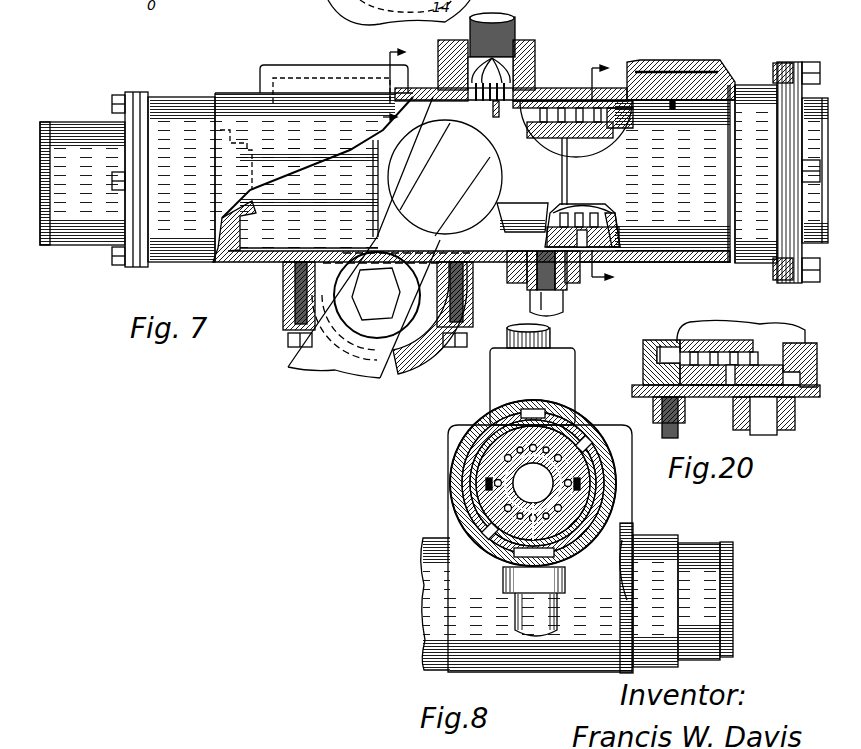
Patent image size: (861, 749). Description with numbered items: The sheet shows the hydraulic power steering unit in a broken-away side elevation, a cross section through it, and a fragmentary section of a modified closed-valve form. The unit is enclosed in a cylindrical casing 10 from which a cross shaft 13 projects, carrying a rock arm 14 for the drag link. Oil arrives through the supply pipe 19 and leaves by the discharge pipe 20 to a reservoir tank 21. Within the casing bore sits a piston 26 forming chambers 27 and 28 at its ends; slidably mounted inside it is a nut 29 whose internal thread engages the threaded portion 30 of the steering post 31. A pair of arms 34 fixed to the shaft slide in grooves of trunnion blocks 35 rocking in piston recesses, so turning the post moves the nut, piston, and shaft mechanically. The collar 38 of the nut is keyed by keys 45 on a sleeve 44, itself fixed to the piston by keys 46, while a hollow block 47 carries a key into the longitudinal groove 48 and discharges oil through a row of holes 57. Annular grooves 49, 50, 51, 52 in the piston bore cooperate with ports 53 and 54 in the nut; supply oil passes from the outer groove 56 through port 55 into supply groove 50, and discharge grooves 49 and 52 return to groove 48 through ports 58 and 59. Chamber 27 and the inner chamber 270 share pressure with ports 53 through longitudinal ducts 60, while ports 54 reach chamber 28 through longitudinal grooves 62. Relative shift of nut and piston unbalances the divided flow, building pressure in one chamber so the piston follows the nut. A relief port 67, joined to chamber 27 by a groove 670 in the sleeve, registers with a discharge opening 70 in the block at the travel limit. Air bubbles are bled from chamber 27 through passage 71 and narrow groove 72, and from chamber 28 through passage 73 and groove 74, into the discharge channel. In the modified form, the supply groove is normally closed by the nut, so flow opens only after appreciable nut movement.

In FIG. 7, the cylindrical casing 10 is at (572, 88).
In FIG. 20, the cylindrical casing 10 is at (643, 388).
In FIG. 8, the cylindrical casing 10 is at (497, 418).
In FIG. 7, the cross shaft 13 is at (366, 202).
In FIG. 7, the rock arm 14 is at (327, 364).
In FIG. 7, the supply pipe 19 is at (540, 296).
In FIG. 20, the supply pipe 19 is at (775, 433).
In FIG. 8, the supply pipe 19 is at (555, 613).
In FIG. 7, the discharge pipe 20 is at (492, 16).
In FIG. 8, the reservoir tank 21 is at (552, 340).
In FIG. 7, the piston 26 is at (675, 174).
In FIG. 20, the piston 26 is at (647, 358).
In FIG. 8, the piston 26 is at (474, 450).
In FIG. 7, the chamber 27 is at (735, 88).
In FIG. 7, the chamber 28 is at (262, 228).
In FIG. 20, the nut 29 is at (680, 340).
In FIG. 8, the threaded portion 30 is at (533, 483).
In FIG. 7, the steering post 31 is at (342, 196).
In FIG. 7, the arms 34 is at (445, 178).
In FIG. 7, the trunnion blocks 35 is at (437, 161).
In FIG. 8, the collar 38 is at (476, 500).
In FIG. 8, the sleeve 44 is at (486, 467).
In FIG. 8, the keys 45 is at (490, 486).
In FIG. 8, the keys 46 is at (495, 436).
In FIG. 7, the block 47 is at (535, 42).
In FIG. 8, the block 47 is at (565, 363).
In FIG. 7, the longitudinal groove 48 is at (553, 101).
In FIG. 8, the longitudinal groove 48 is at (540, 409).
In FIG. 7, the annular groove 49 is at (612, 132).
In FIG. 7, the annular groove 50 is at (580, 213).
In FIG. 7, the annular groove 51 is at (568, 230).
In FIG. 7, the annular groove 52 is at (553, 205).
In FIG. 7, the ports 53 is at (598, 213).
In FIG. 20, the ports 53 is at (748, 352).
In FIG. 7, the ports 54 is at (566, 213).
In FIG. 20, the ports 54 is at (715, 340).
In FIG. 7, the port 55 is at (583, 247).
In FIG. 20, the port 55 is at (730, 372).
In FIG. 7, the longitudinal groove 56 is at (625, 262).
In FIG. 20, the longitudinal groove 56 is at (800, 393).
In FIG. 8, the longitudinal groove 56 is at (566, 574).
In FIG. 7, the holes 57 is at (490, 77).
In FIG. 7, the port 58 is at (570, 111).
In FIG. 7, the port 59 is at (570, 119).
In FIG. 20, the longitudinal ducts 60 is at (805, 348).
In FIG. 8, the longitudinal ducts 60 is at (532, 512).
In FIG. 7, the longitudinal grooves 62 is at (530, 204).
In FIG. 8, the relief port 67 is at (586, 418).
In FIG. 8, the discharge opening 70 is at (572, 404).
In FIG. 7, the passage 71 is at (675, 66).
In FIG. 7, the narrow groove 72 is at (672, 108).
In FIG. 7, the passage 73 is at (312, 78).
In FIG. 7, the narrow groove 74 is at (496, 112).
In FIG. 20, the chamber 270 is at (668, 347).
In FIG. 8, the groove 670 is at (590, 432).